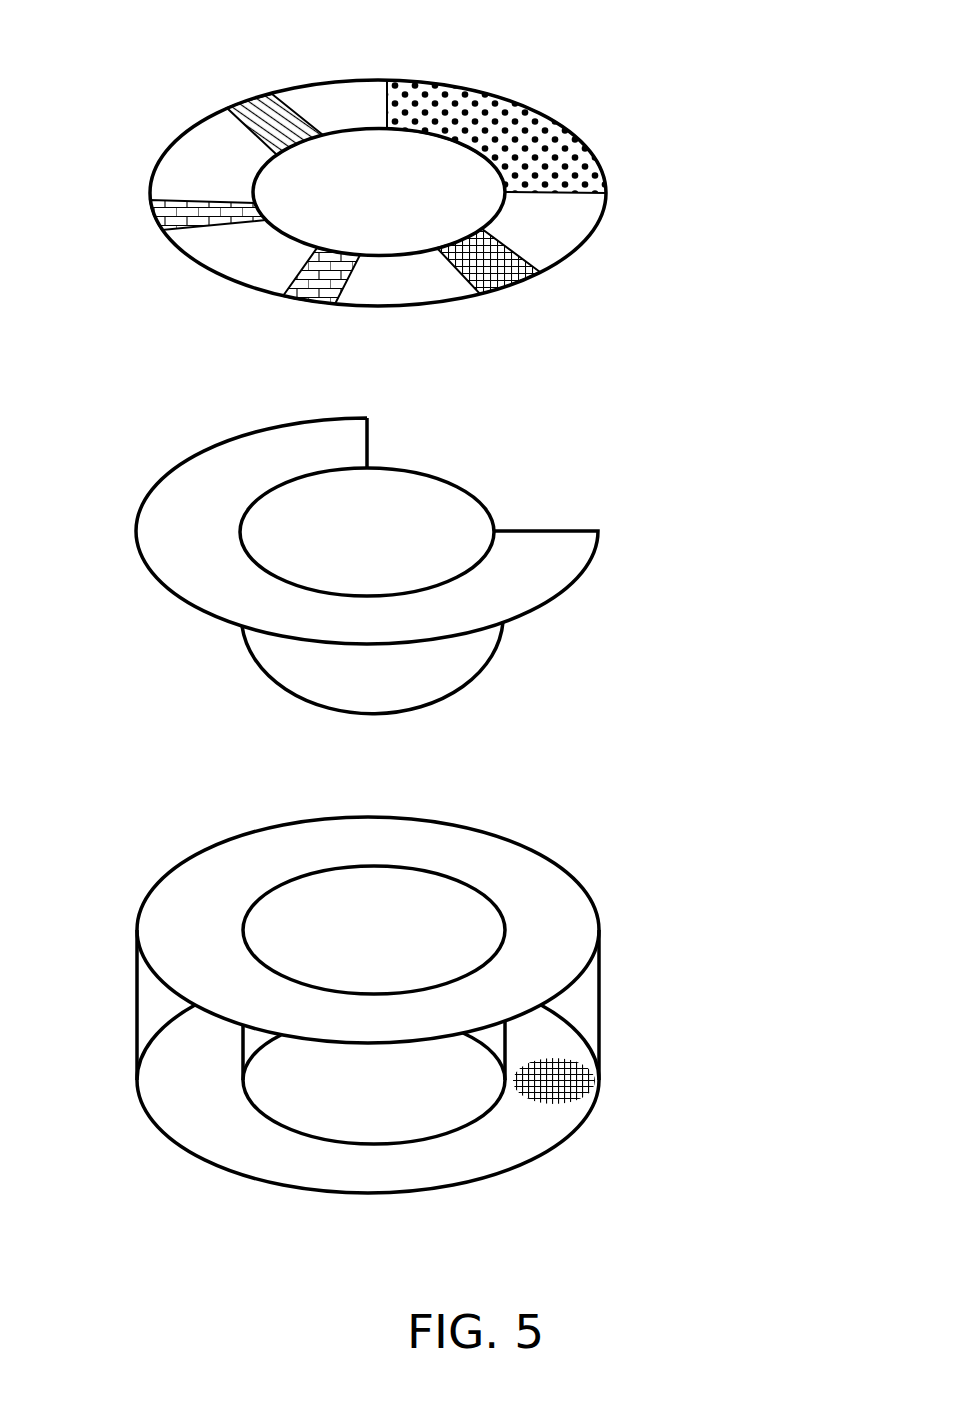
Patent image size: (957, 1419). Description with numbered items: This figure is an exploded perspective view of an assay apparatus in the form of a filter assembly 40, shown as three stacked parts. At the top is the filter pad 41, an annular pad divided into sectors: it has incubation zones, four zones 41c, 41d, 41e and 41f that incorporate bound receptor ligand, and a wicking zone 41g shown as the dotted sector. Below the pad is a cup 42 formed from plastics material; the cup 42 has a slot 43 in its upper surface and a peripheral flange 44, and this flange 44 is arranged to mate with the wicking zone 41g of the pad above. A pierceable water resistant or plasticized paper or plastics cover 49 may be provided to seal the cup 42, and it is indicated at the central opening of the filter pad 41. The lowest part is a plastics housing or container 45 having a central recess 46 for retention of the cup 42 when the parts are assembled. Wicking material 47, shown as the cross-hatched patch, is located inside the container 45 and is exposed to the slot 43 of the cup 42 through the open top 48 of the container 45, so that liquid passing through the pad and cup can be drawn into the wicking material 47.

The filter assembly 40 is at (680, 334).
The filter pad 41 is at (558, 108).
The zone incorporating bound receptor ligand 41c is at (512, 267).
The zone incorporating bound receptor ligand 41d is at (296, 294).
The zone incorporating bound receptor ligand 41e is at (153, 216).
The zone incorporating bound receptor ligand 41f is at (250, 112).
The wicking zone 41g is at (472, 90).
The cup 42 is at (292, 663).
The slot 43 is at (412, 510).
The peripheral flange 44 is at (527, 562).
The plastics housing or container 45 is at (587, 883).
The central recess 46 is at (404, 916).
The wicking material 47 is at (552, 1080).
The open top 48 is at (206, 915).
The pierceable cover 49 is at (397, 203).